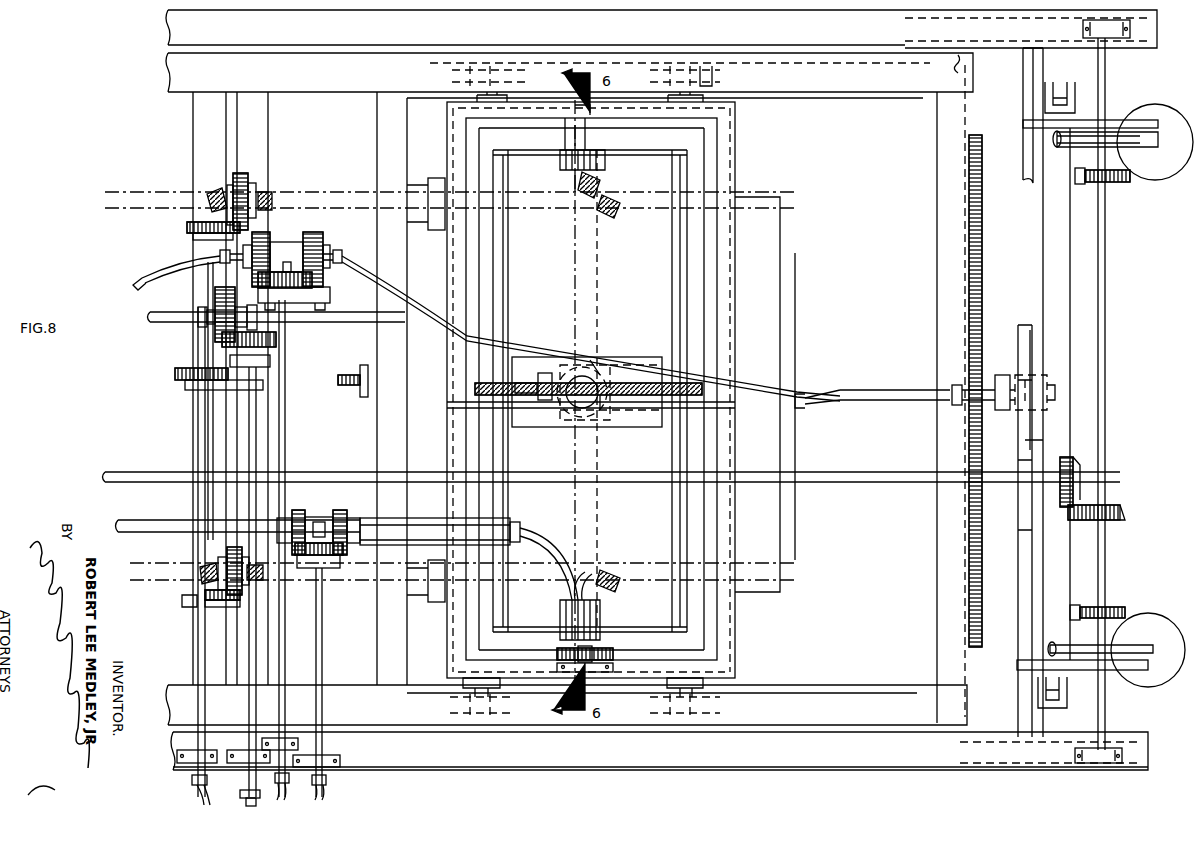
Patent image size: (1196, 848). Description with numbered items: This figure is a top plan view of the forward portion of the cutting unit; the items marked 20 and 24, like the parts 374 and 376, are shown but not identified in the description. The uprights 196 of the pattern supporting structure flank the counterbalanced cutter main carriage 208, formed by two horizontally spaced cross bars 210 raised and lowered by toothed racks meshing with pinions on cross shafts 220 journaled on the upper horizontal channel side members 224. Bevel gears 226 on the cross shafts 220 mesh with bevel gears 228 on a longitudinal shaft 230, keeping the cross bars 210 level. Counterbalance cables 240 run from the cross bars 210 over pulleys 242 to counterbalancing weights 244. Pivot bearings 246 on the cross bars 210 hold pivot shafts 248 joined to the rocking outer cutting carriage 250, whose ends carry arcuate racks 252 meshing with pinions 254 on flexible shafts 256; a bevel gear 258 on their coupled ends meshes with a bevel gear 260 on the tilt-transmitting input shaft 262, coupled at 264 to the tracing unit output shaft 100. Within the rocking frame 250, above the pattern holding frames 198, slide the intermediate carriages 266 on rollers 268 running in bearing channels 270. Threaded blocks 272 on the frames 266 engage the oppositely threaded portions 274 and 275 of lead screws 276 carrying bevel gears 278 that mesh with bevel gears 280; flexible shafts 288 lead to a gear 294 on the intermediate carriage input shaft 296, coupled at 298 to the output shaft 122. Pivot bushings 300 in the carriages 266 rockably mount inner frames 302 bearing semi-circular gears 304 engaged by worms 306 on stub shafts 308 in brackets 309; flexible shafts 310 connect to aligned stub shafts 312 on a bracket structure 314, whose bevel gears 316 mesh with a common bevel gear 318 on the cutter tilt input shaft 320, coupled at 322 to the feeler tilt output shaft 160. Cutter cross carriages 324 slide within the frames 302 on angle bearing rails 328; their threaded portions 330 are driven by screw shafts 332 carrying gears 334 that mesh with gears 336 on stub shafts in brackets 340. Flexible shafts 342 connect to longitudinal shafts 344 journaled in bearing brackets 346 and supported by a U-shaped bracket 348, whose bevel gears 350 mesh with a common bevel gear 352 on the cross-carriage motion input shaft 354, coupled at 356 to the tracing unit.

The frame rail 20 is at (147, 97).
The side frame member 24 is at (181, 146).
The tracing unit tilt-transmitting output shaft 100 is at (244, 798).
The intermediate carriage output shaft 122 is at (196, 795).
The feeler tilt output shaft 160 is at (300, 792).
The uprights 196 is at (1035, 47).
The pattern holding frames 198 is at (806, 257).
The cutter main carriage 208 is at (1085, 290).
The cross bars 210 is at (1072, 342).
The cross shafts 220 is at (1105, 440).
The upper horizontal channel side members 224 is at (600, 762).
The bevel gears 226 is at (1122, 517).
The bevel gears 228 is at (1075, 478).
The longitudinal shaft 230 is at (884, 484).
The counterbalance cables 240 is at (1152, 395).
The pulleys 242 is at (1062, 645).
The main cutting carriage counterbalancing weights 244 is at (1165, 100).
The pivot bearings 246 is at (1040, 374).
The pivot shafts 248 is at (1000, 374).
The outer cutting carriage 250 is at (1005, 72).
The arcuate racks 252 is at (972, 270).
The pinions 254 is at (960, 382).
The flexible shafts 256 is at (163, 320).
The bevel gear 258 is at (215, 295).
The bevel gear 260 is at (276, 340).
The outer carriage tilt-transmitting input shaft 262 is at (255, 430).
The coupling 264 is at (240, 790).
The intermediate cutting carriages 266 is at (745, 161).
The rollers 268 is at (712, 73).
The bearing channels 270 is at (458, 60).
The internally-threaded blocks 272 is at (440, 177).
The threaded portion 274 is at (358, 198).
The threaded portion 275 is at (190, 195).
The screw shafts 276 is at (226, 195).
The bevel gear 278 is at (246, 173).
The bevel gears 280 is at (186, 226).
The flexible shafts 288 is at (208, 278).
The gear 294 is at (180, 375).
The intermediate carriage input shaft 296 is at (198, 362).
The coupling 298 is at (195, 780).
The flanged tubular pivot bushings 300 is at (595, 163).
The inner frames 302 is at (690, 283).
The semi-circular gears 304 is at (591, 389).
The toothed worms 306 is at (578, 418).
The stub shafts 308 is at (540, 400).
The brackets 309 is at (546, 372).
The flexible shafts 310 is at (138, 283).
The stub shafts 312 is at (218, 255).
The bracket structure 314 is at (312, 282).
The bevel gears 316 is at (270, 240).
The common bevel gear 318 is at (330, 296).
The cutter tilt input shaft 320 is at (290, 378).
The coupling 322 is at (295, 548).
The cutter cross carriages 324 is at (662, 362).
The angle bearing rails 328 is at (505, 284).
The internally-threaded portion 330 is at (605, 368).
The screw shafts 332 is at (580, 183).
The gears 334 is at (557, 655).
The gears 336 is at (613, 654).
The brackets 340 is at (615, 667).
The flexible shafts 342 is at (568, 540).
The longitudinal shafts 344 is at (430, 527).
The bearing brackets 346 is at (397, 518).
The U-shaped bracket 348 is at (320, 520).
The bevel gears 350 is at (298, 510).
The common bevel gear 352 is at (340, 565).
The cutter cross-carriage motion input shaft 354 is at (322, 655).
The coupling 356 is at (325, 780).
The roller 374 is at (570, 335).
The pivot pin 376 is at (605, 412).